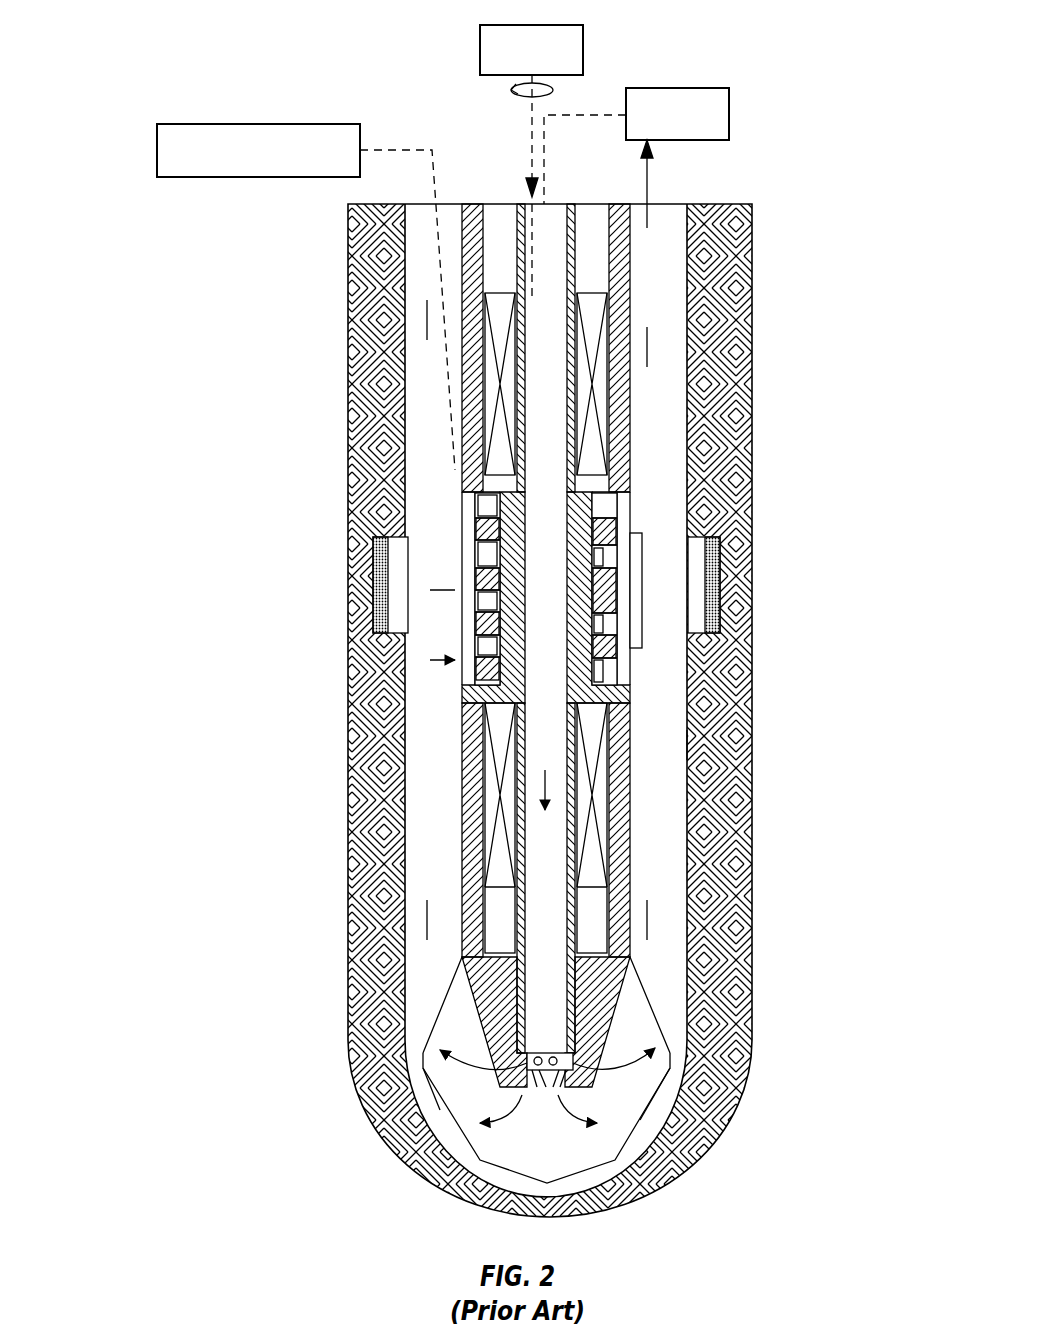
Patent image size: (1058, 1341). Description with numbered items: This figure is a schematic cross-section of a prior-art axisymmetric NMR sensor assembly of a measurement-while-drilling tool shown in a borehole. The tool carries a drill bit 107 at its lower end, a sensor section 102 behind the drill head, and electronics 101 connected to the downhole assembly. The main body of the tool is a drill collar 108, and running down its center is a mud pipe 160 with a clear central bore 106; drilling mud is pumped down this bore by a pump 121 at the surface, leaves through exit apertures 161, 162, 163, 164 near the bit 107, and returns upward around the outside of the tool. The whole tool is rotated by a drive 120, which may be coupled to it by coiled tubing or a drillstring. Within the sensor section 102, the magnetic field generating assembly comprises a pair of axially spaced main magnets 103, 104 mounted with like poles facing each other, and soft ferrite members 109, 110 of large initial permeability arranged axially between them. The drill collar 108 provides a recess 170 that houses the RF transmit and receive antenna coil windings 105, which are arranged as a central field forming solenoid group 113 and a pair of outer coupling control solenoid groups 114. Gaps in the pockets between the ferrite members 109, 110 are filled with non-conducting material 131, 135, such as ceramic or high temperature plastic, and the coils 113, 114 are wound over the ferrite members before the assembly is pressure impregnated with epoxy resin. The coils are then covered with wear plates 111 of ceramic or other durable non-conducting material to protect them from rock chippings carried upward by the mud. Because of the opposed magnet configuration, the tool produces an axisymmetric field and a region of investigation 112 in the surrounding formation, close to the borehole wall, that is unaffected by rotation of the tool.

The electronics 101 is at (157, 137).
The sensor section 102 is at (417, 393).
The main magnet 103 is at (596, 308).
The main magnet 104 is at (598, 867).
The RF transmit antenna and RF receive antenna coil windings 105 is at (612, 555).
The central bore 106 is at (613, 762).
The drill bit 107 is at (573, 1153).
The drill collar 108 is at (621, 380).
The ferrite member 109 is at (478, 620).
The ferrite member 110 is at (478, 535).
The wear plates 111 is at (660, 475).
The region of investigation 112 is at (722, 595).
The central field forming solenoid group 113 is at (464, 610).
The outer coupling control solenoid groups 114 is at (466, 498).
The drive 120 is at (583, 33).
The pump 121 is at (729, 97).
The non-conducting material 131 is at (457, 525).
The non-conducting material 135 is at (643, 540).
The mud pipe 160 is at (580, 987).
The exit aperture 161 is at (433, 1085).
The exit aperture 162 is at (445, 1140).
The exit aperture 163 is at (665, 1110).
The exit aperture 164 is at (675, 1072).
The recess 170 is at (715, 745).